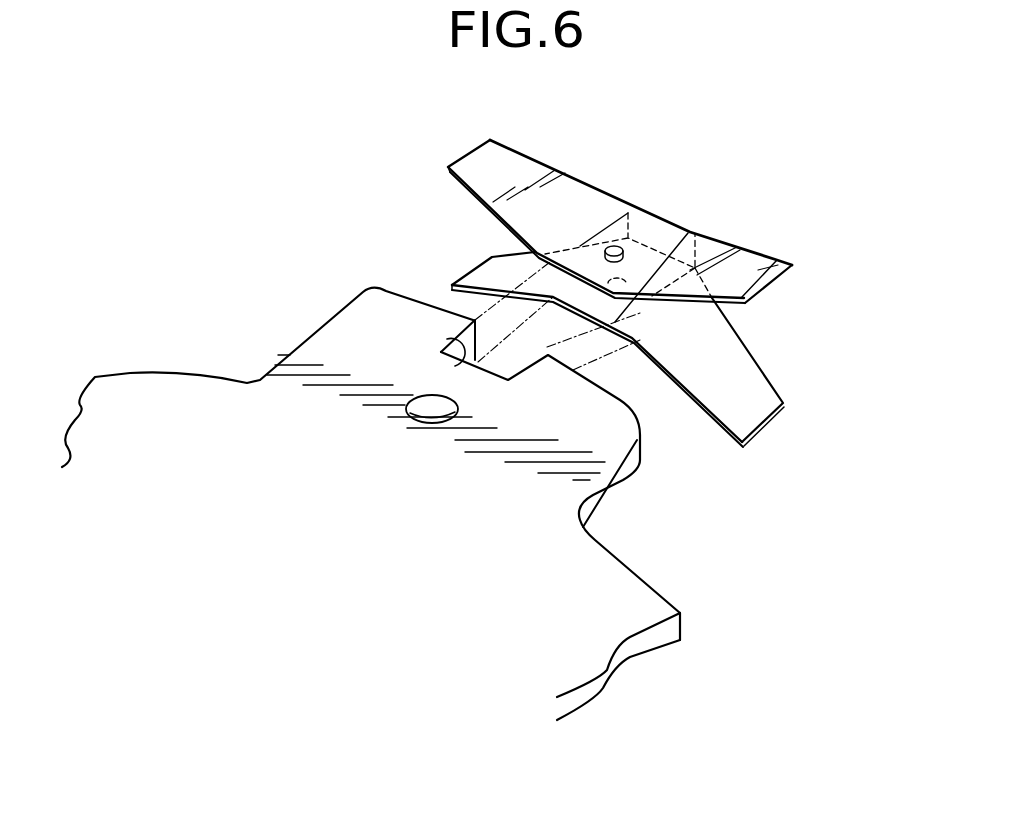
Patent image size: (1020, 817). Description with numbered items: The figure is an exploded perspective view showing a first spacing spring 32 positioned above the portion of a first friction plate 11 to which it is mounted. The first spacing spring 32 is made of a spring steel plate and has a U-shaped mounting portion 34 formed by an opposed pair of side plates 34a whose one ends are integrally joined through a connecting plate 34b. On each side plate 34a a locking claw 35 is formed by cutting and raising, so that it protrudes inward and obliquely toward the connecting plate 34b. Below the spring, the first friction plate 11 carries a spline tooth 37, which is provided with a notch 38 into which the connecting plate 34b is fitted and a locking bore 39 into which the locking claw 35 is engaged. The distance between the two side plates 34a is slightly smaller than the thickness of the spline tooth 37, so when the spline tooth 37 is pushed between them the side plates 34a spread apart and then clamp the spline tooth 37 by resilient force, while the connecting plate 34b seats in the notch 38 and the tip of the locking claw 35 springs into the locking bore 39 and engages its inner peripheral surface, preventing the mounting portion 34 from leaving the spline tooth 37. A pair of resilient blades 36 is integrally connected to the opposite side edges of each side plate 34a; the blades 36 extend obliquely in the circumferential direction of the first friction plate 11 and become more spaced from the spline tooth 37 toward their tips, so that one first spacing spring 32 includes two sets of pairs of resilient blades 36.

The first friction plate 11 is at (632, 588).
The first spacing spring 32 is at (675, 218).
The U-shaped mounting portion 34 is at (667, 238).
The side plate 34a is at (657, 227).
The connecting plate 34b is at (695, 260).
The locking claw 35 is at (616, 247).
The resilient blade 36 is at (483, 167).
The spline tooth 37 is at (623, 468).
The notch 38 is at (445, 339).
The locking bore 39 is at (432, 425).